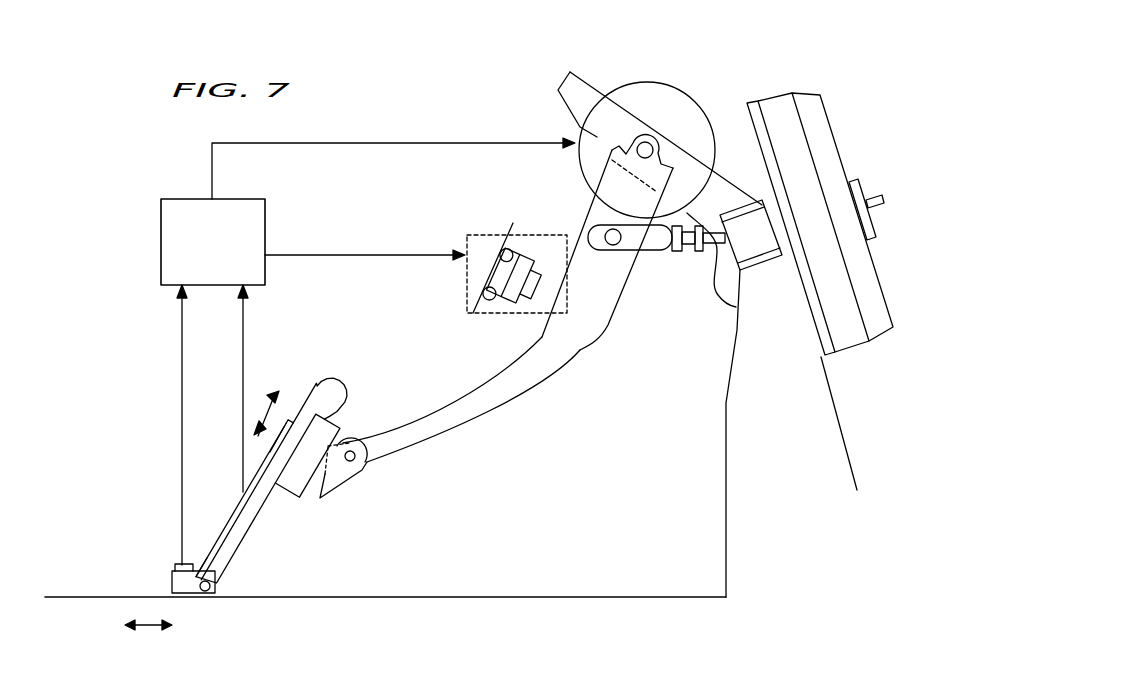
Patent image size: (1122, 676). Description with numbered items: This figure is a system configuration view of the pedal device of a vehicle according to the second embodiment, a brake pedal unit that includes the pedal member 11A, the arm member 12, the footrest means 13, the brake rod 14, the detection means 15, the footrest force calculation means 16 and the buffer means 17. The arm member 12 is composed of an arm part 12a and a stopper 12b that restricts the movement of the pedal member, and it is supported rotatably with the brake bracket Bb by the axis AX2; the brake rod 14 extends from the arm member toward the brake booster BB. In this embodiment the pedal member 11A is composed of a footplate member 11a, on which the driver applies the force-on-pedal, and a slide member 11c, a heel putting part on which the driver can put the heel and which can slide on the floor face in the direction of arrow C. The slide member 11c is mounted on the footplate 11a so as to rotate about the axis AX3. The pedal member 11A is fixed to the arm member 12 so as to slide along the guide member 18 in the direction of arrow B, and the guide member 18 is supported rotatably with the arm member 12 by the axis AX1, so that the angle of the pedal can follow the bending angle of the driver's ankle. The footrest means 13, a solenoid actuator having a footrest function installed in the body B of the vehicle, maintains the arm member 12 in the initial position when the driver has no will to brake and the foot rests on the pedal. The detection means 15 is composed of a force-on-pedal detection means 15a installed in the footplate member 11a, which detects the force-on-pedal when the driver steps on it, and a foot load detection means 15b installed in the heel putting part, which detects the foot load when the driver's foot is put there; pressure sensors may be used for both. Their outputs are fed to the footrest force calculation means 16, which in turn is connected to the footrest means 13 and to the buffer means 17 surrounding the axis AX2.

The pedal member 11A is at (237, 454).
The footplate member 11a is at (341, 389).
The slide member 11c is at (197, 598).
The arm member 12 is at (496, 336).
The arm part 12a is at (460, 420).
The stopper 12b is at (331, 482).
The footrest means 13 is at (467, 290).
The brake rod 14 is at (653, 241).
The detection means 15 is at (200, 488).
The force-on-pedal detection means 15a is at (258, 462).
The foot load detection means 15b is at (195, 565).
The footrest force calculation means 16 is at (160, 238).
The buffer means 17 is at (579, 165).
The guide member 18 is at (298, 484).
The axis AX1 is at (367, 462).
The axis AX2 is at (647, 148).
The axis AX3 is at (200, 586).
The body B is at (726, 474).
The brake booster BB is at (777, 110).
The brake bracket Bb is at (573, 92).
The arrow C is at (148, 638).